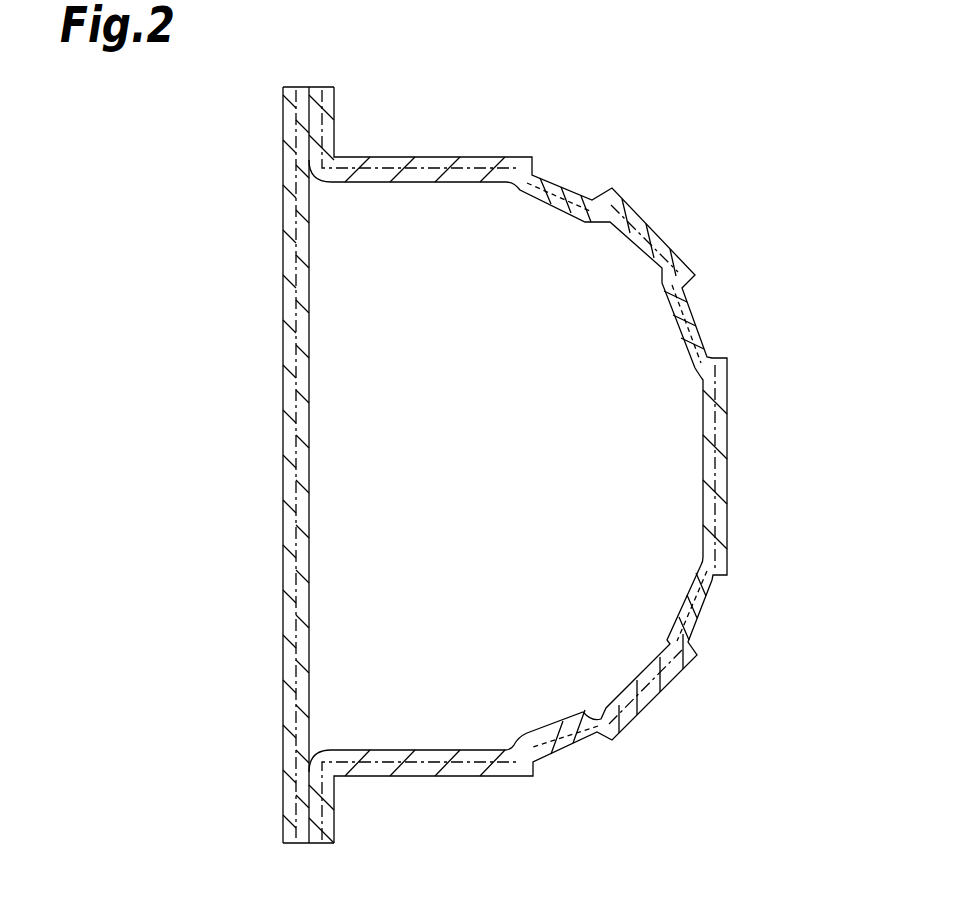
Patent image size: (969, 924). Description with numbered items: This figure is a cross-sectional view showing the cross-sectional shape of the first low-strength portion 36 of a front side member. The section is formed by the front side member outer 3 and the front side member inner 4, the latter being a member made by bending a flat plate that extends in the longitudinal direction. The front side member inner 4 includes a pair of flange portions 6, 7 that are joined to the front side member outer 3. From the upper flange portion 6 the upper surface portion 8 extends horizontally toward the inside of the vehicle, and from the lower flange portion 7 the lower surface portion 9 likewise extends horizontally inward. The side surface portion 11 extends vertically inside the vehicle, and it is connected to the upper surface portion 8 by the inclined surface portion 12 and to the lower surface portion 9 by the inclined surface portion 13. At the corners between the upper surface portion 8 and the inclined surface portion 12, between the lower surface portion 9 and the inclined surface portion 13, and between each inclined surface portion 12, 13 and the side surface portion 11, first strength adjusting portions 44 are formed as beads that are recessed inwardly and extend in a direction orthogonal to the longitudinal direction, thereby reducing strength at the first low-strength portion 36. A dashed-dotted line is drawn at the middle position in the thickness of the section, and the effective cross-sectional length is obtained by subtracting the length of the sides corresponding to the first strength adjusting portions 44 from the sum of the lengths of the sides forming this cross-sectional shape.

The front side member outer 3 is at (280, 383).
The front side member inner 4 is at (572, 430).
The flange portion 6 is at (333, 125).
The flange portion 7 is at (333, 807).
The upper surface portion 8 is at (434, 165).
The lower surface portion 9 is at (440, 777).
The side surface portion 11 is at (729, 452).
The inclined surface portion 12 is at (648, 222).
The inclined surface portion 13 is at (654, 699).
The first low-strength portion 36 is at (414, 93).
The first strength adjusting portions 44 is at (567, 190).